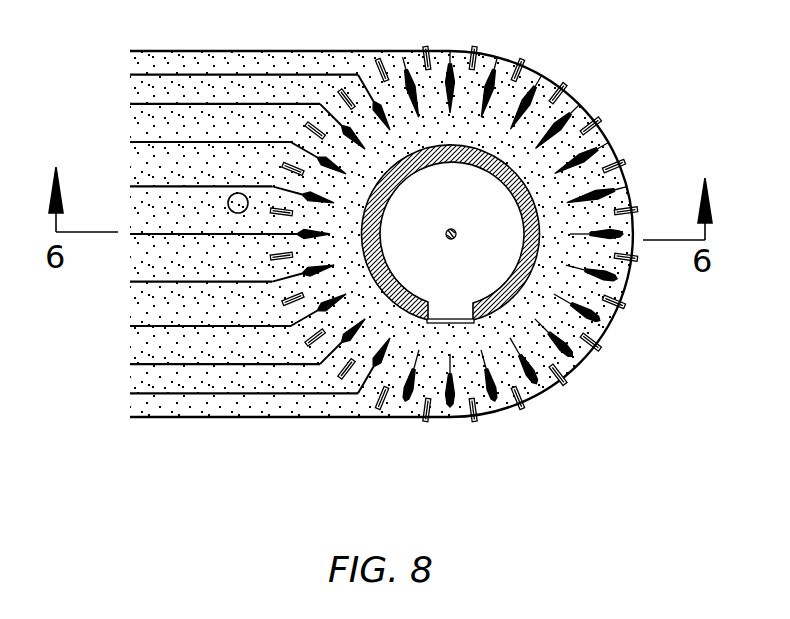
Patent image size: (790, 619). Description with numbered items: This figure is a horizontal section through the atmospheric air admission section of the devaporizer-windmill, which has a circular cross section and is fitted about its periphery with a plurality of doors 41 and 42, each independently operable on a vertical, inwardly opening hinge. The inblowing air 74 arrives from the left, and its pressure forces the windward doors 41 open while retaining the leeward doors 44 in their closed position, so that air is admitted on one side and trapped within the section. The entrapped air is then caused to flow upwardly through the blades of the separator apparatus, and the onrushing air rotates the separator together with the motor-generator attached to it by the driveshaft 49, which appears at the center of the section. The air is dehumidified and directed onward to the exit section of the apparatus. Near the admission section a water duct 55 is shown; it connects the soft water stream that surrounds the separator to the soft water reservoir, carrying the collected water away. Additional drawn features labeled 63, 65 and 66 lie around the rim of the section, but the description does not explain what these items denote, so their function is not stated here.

The windward doors 41 is at (384, 60).
The doors 42 is at (516, 60).
The leeward doors 44 is at (604, 101).
The driveshaft 49 is at (432, 197).
The water duct 55 is at (137, 256).
The slot 63 is at (620, 320).
The edge insert 65 is at (608, 393).
The closure plate 66 is at (490, 389).
The inblowing air 74 is at (381, 208).